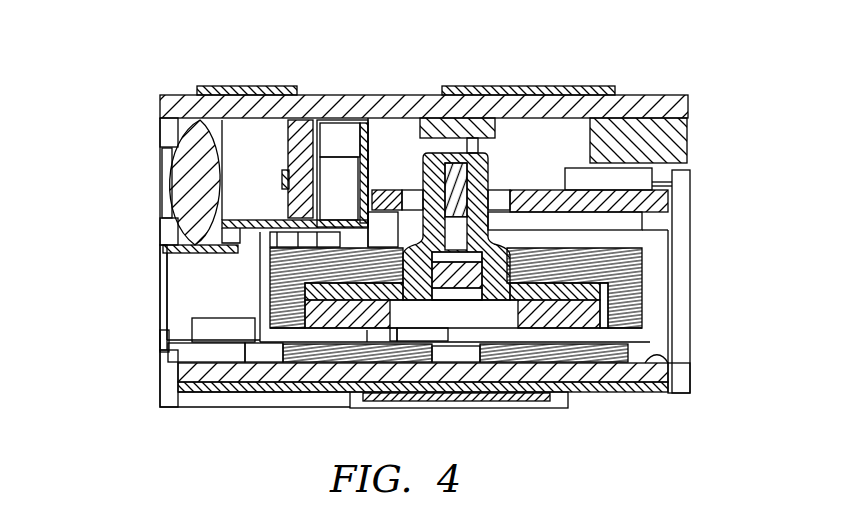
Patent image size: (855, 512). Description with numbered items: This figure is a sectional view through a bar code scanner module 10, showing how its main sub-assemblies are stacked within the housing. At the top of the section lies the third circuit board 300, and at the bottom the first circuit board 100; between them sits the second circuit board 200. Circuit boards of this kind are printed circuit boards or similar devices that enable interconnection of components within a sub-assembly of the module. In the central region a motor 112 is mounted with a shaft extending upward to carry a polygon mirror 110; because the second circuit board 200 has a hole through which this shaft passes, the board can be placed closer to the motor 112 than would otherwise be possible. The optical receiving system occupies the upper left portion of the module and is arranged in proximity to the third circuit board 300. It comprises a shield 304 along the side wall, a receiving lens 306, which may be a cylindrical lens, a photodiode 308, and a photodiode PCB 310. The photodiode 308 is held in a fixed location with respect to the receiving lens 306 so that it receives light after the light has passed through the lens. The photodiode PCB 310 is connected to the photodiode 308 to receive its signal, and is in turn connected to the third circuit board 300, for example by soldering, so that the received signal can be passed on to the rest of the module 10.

The bar code scanner module 10 is at (112, 101).
The first circuit board 100 is at (675, 373).
The polygon mirror 110 is at (600, 295).
The motor 112 is at (593, 277).
The second circuit board 200 is at (672, 204).
The third circuit board 300 is at (652, 96).
The shield 304 is at (160, 277).
The receiving lens 306 is at (162, 199).
The photodiode 308 is at (282, 180).
The photodiode PCB 310 is at (288, 139).